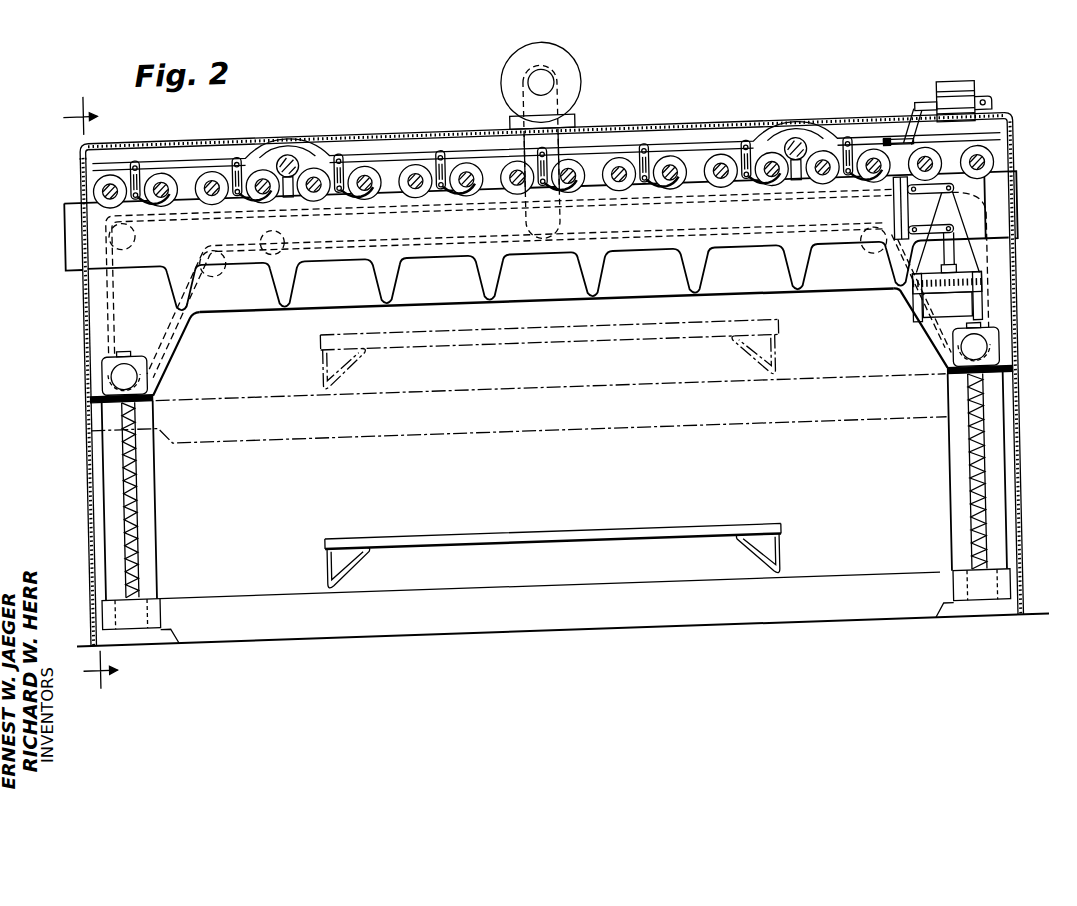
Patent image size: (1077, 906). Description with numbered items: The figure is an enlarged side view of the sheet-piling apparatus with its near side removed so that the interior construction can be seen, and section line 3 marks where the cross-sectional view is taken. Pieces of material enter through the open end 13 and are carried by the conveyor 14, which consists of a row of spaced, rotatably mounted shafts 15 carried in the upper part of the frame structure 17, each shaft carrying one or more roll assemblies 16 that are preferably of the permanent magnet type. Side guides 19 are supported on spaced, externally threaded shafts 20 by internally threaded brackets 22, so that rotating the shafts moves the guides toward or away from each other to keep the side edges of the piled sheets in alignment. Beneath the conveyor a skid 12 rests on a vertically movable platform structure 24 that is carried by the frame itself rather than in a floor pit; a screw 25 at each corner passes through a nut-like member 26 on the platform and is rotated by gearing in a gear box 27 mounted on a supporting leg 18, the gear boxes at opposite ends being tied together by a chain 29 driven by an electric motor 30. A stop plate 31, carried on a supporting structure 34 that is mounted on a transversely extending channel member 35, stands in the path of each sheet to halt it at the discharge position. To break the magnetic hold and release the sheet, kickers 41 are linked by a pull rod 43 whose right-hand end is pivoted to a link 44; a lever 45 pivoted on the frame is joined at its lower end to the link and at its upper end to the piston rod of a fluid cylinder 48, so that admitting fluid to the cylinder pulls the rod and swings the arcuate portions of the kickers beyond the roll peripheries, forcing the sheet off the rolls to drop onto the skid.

The section line 3- 3 is at (101, 392).
The skid 12 is at (598, 551).
The open end 13 is at (80, 164).
The conveyor 14 is at (86, 186).
The shaft 15 is at (159, 192).
The roll assembly 16 is at (706, 188).
The frame structure 17 is at (614, 138).
The supporting leg 18 is at (152, 512).
The side guide 19 is at (458, 260).
The shaft 20 is at (286, 162).
The bracket 22 is at (289, 195).
The platform structure 24 is at (837, 631).
The screw 25 is at (126, 465).
The nut-like member 26 is at (130, 619).
The gear box 27 is at (101, 391).
The chain 29 is at (260, 283).
The electric motor 30 is at (569, 98).
The stop plate 31 is at (892, 236).
The supporting structure 34 is at (971, 263).
The channel member 35 is at (923, 346).
The kicker 41 is at (266, 199).
The pull rod 43 is at (382, 173).
The link 44 is at (890, 103).
The lever 45 is at (913, 136).
The fluid cylinder 48 is at (964, 117).